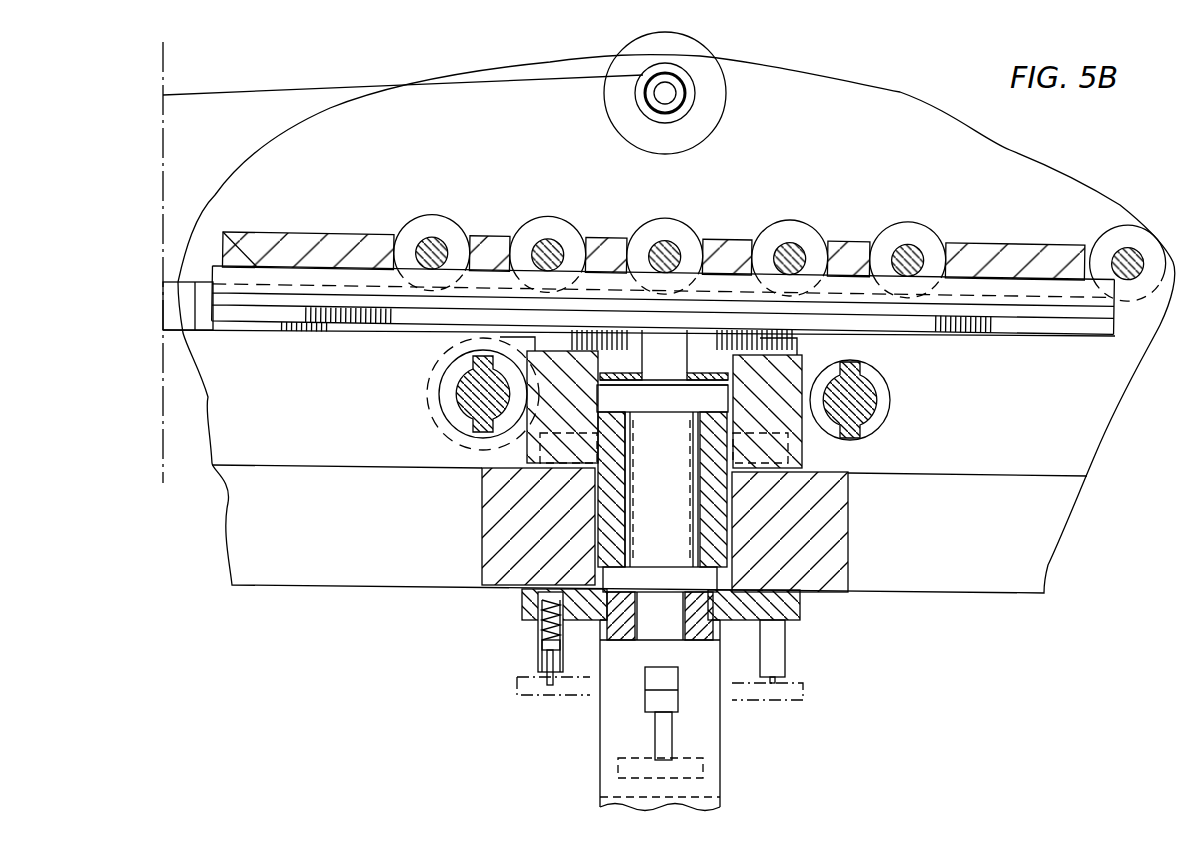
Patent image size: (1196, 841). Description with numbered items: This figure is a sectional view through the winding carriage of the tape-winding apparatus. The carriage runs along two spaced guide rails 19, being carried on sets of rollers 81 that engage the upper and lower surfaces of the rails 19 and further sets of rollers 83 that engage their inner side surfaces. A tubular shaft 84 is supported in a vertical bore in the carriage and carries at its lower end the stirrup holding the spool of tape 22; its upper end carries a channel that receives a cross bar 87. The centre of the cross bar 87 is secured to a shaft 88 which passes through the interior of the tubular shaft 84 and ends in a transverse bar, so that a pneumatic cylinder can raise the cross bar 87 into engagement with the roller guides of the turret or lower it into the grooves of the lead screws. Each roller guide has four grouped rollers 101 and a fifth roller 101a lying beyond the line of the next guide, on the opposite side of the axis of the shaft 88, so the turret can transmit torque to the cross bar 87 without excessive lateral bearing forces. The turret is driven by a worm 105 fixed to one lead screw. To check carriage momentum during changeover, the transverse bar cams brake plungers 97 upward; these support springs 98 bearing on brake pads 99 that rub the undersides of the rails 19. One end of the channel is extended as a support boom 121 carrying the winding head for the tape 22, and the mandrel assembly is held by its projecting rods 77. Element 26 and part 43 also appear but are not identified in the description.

The tape 22 is at (215, 95).
The rod 77 is at (676, 93).
The rollers 101 is at (447, 227).
The fifth roller 101a is at (1145, 228).
The support boom 121 is at (170, 307).
The guide rollers 26 is at (863, 403).
The worm 105 is at (428, 430).
The cross bar 87 is at (897, 322).
The shaft 88 is at (660, 358).
The tubular shaft 84 is at (664, 489).
The rollers 81 is at (770, 455).
The guide rails 19 is at (818, 512).
The rollers 83 is at (825, 595).
The brake pads 99 is at (537, 607).
The springs 98 is at (550, 627).
The brake plungers 97 is at (537, 663).
The cylinder 43 is at (707, 728).